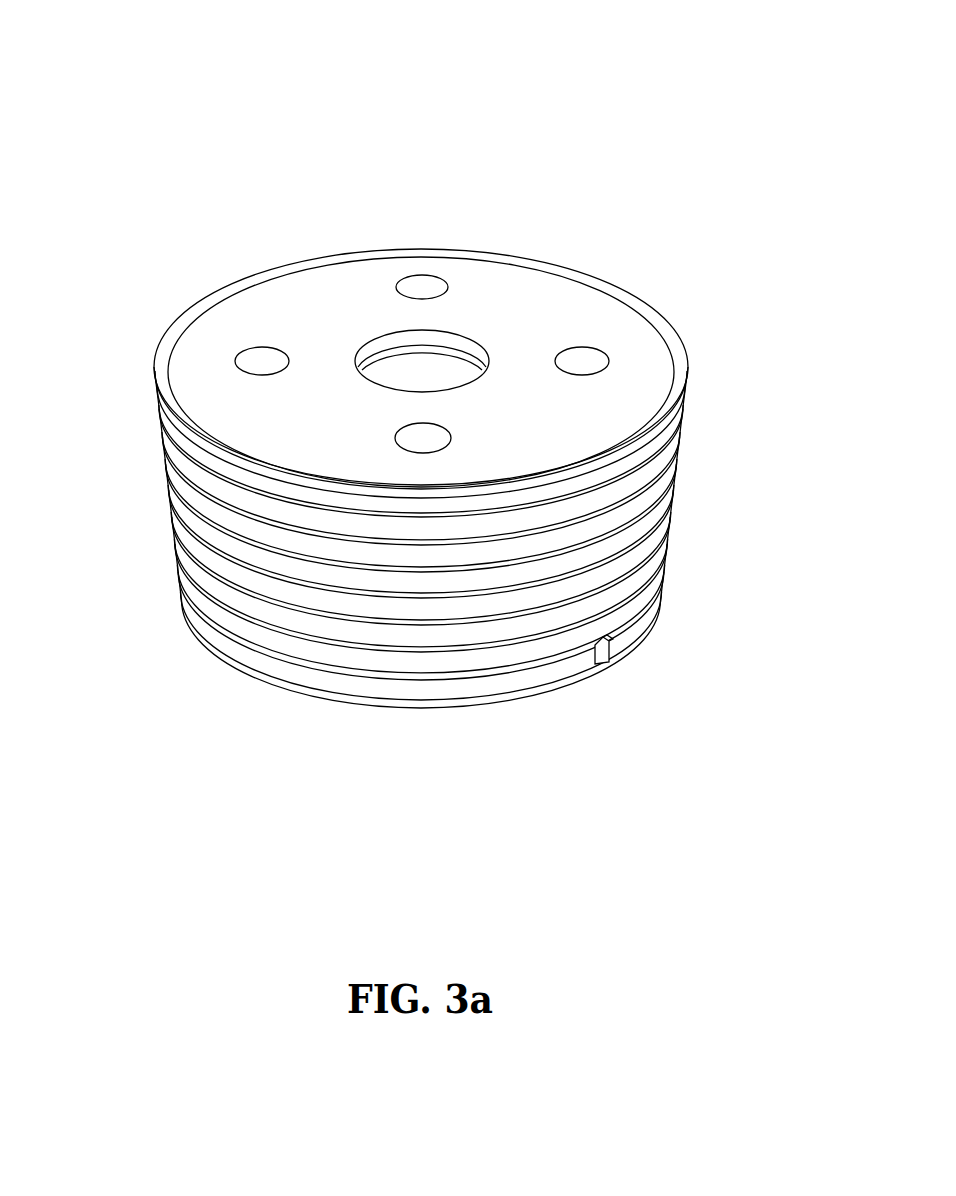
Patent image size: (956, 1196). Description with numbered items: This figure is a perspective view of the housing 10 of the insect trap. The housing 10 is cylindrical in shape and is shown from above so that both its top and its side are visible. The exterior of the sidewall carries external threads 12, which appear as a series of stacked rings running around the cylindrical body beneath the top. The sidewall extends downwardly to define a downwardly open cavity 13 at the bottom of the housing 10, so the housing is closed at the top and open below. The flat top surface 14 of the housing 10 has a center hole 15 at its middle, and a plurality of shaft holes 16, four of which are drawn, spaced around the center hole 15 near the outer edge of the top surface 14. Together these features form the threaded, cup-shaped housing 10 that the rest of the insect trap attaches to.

The housing 10 is at (432, 483).
The external threads 12 is at (217, 573).
The downwardly open cavity 13 is at (473, 702).
The top surface 14 is at (555, 415).
The center hole 15 is at (368, 338).
The shaft holes 16 is at (430, 280).